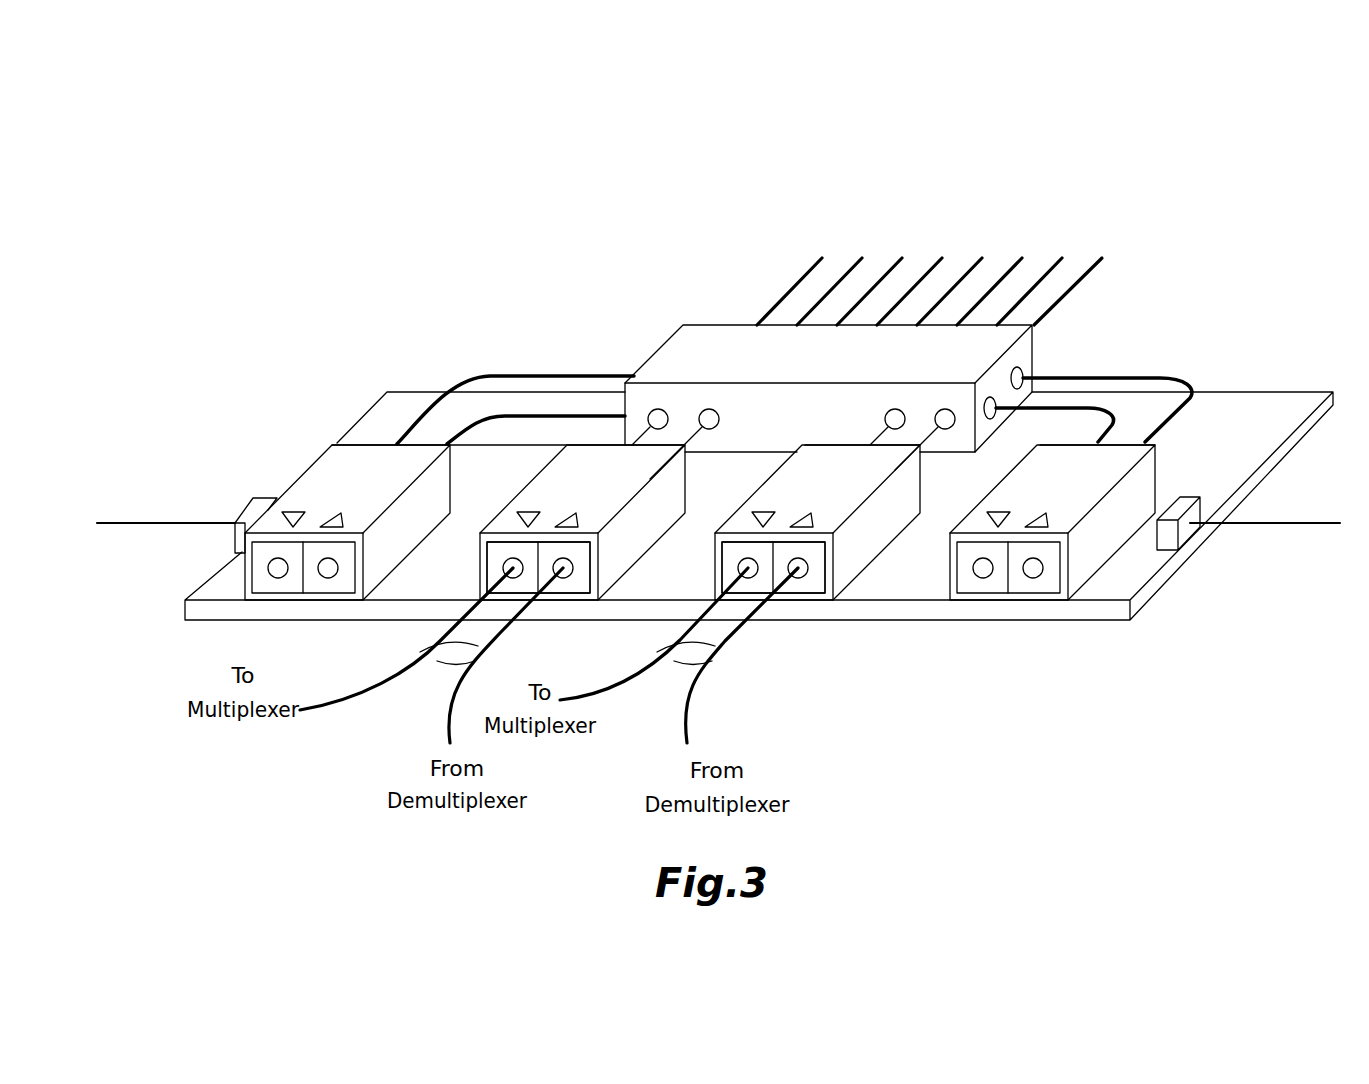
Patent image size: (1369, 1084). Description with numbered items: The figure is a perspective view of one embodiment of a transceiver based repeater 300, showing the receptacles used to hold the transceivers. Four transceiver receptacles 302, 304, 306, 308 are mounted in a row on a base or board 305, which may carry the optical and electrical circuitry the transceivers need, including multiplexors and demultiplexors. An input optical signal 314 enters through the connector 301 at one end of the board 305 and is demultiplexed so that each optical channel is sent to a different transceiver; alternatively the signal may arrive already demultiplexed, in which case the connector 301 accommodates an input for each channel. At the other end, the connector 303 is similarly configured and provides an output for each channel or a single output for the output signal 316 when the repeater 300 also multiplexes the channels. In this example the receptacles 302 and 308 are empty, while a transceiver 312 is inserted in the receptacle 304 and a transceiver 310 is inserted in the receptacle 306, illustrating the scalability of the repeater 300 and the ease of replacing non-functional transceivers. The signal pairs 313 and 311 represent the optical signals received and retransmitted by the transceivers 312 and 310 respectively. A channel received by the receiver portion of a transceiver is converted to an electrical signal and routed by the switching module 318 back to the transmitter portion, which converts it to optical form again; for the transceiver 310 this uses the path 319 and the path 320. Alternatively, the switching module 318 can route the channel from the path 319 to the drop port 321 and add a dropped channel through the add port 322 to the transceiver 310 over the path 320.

The transceiver based repeater 300 is at (1117, 180).
The connector 301 is at (252, 497).
The transceiver receptacle 302 is at (328, 472).
The connector 303 is at (1190, 497).
The transceiver receptacle 304 is at (590, 452).
The board 305 is at (393, 397).
The transceiver receptacle 306 is at (828, 514).
The transceiver receptacle 308 is at (1088, 565).
The transceiver 310 is at (818, 586).
The signal pair 311 is at (680, 662).
The transceiver 312 is at (583, 593).
The signal pair 313 is at (447, 662).
The input optical signal 314 is at (140, 523).
The output signal 316 is at (1265, 525).
The switching module 318 is at (683, 343).
The path 319 is at (930, 435).
The path 320 is at (870, 430).
The drop port 321 is at (1095, 268).
The add port 322 is at (1048, 267).